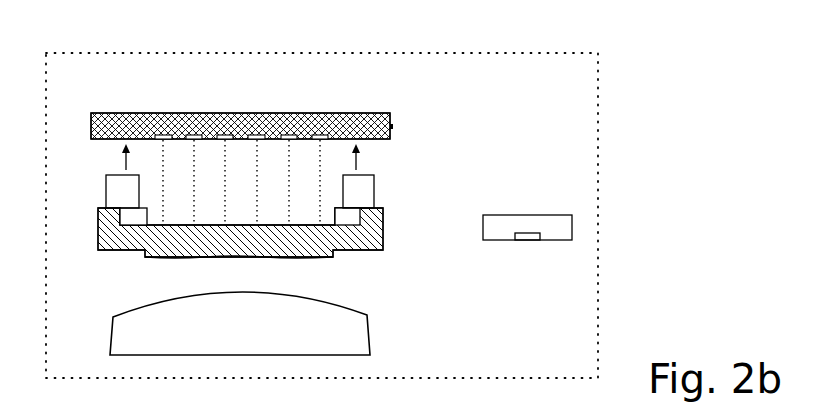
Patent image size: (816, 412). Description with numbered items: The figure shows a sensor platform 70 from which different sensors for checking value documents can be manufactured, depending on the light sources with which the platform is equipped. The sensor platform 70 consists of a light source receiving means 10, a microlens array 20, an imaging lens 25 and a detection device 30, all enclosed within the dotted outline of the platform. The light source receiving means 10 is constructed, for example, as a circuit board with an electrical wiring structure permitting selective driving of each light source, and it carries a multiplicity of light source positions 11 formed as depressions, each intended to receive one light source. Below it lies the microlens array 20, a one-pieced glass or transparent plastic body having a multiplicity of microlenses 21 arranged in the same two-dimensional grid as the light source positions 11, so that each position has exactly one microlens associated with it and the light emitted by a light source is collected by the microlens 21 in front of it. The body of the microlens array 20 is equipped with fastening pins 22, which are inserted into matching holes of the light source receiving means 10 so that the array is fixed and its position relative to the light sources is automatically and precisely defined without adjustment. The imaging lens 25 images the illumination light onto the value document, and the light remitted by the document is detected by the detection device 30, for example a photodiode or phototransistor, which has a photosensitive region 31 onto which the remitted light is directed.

The sensor platform 70 is at (322, 198).
The light source receiving means 10 is at (385, 113).
The light source positions 11 is at (154, 130).
The microlens array 20 is at (383, 223).
The microlenses 21 is at (333, 258).
The fastening pins 22 is at (374, 185).
The imaging lens 25 is at (368, 325).
The detection device 30 is at (545, 215).
The photosensitive region 31 is at (527, 241).